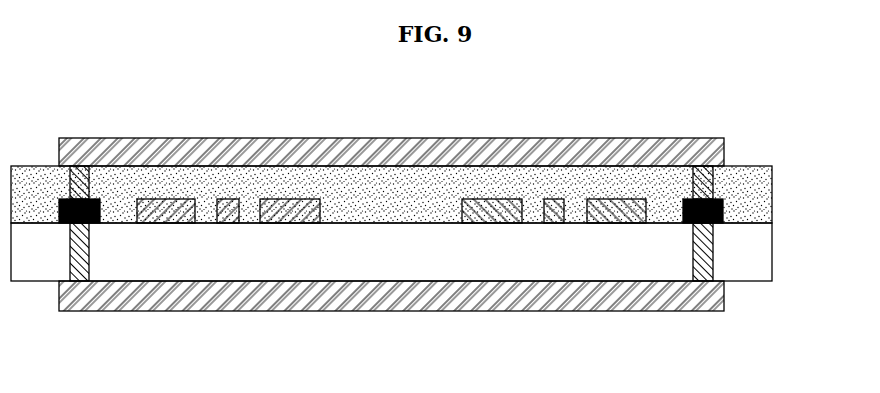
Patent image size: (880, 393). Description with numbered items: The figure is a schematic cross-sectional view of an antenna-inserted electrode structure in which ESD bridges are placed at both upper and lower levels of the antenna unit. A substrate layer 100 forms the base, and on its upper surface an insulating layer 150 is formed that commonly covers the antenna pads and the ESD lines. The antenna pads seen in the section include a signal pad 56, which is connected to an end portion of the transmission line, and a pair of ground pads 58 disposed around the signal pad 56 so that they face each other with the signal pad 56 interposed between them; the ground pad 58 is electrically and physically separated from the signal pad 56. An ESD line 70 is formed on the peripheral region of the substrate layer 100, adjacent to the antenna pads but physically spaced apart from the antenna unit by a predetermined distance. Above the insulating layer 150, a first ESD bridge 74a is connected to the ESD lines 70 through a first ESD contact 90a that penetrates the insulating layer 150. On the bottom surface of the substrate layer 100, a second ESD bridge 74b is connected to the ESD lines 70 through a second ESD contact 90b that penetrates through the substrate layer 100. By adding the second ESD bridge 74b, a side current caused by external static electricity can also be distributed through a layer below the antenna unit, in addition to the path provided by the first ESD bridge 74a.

The signal pad 56 is at (235, 198).
The ground pad 58 is at (172, 198).
The ESD line 70 is at (717, 221).
The first ESD bridge 74a is at (629, 151).
The second ESD bridge 74b is at (623, 297).
The first ESD contact 90a is at (84, 167).
The second ESD contact 90b is at (77, 273).
The substrate layer 100 is at (760, 253).
The insulating layer 150 is at (760, 193).